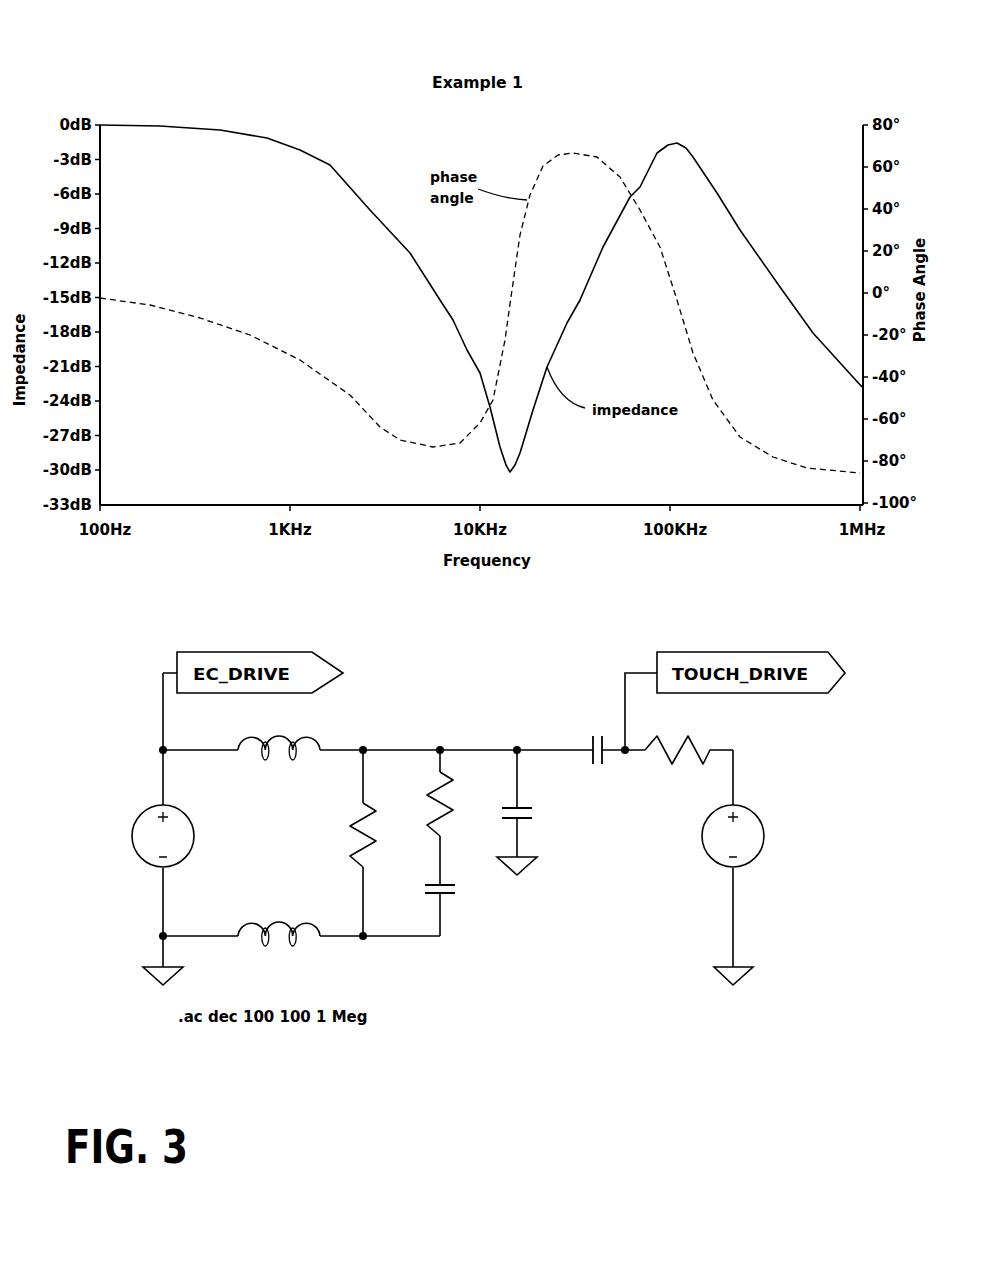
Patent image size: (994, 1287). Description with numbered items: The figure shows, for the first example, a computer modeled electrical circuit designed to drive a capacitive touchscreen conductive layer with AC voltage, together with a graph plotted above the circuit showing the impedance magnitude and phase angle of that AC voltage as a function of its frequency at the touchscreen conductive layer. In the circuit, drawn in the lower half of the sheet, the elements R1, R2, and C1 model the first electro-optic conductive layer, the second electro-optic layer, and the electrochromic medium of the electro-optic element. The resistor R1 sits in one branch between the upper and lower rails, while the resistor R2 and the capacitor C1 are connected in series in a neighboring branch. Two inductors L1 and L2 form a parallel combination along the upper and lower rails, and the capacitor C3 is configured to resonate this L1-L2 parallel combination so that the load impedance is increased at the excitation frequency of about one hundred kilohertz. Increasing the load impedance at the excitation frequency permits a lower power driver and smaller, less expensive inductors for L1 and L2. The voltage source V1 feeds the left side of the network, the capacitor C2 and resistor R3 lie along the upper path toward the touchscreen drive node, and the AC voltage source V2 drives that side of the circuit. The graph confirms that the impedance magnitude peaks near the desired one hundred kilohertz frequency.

The inductor L1 is at (279, 749).
The inductor L2 is at (279, 934).
The resistor R1 is at (378, 835).
The resistor R2 is at (454, 804).
The resistor R3 is at (689, 752).
The capacitor C1 is at (469, 889).
The capacitor C2 is at (594, 752).
The capacitor C3 is at (549, 814).
The voltage source V1 is at (179, 838).
The voltage source V2 is at (748, 849).